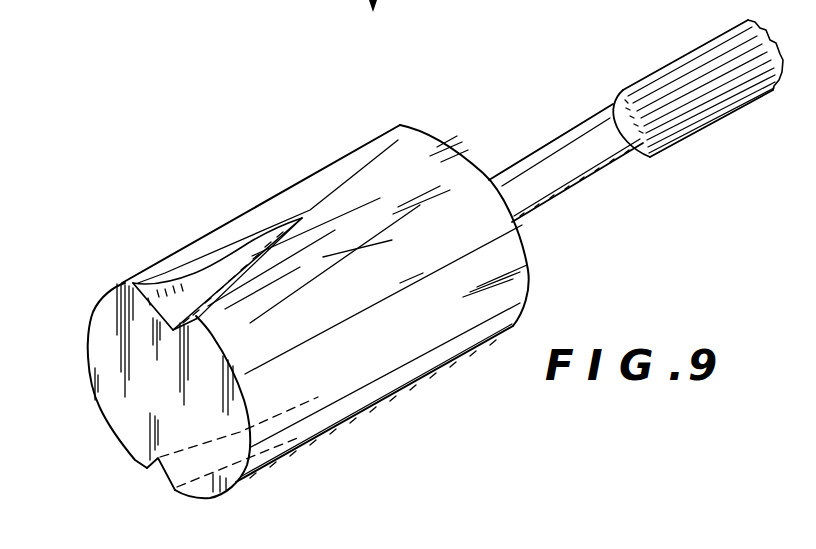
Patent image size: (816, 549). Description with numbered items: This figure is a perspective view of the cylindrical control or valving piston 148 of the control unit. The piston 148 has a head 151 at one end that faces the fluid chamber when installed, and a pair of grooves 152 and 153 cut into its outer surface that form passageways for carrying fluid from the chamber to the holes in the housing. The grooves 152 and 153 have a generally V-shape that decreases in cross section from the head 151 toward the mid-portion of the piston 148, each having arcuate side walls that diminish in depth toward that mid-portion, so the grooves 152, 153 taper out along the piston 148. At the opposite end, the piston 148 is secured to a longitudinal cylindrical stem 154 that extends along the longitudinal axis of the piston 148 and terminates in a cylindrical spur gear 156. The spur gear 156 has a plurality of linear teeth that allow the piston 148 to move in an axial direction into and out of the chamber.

The control piston 148 is at (314, 171).
The head 151 is at (107, 353).
The groove 152 is at (177, 292).
The groove 153 is at (163, 473).
The stem 154 is at (569, 133).
The spur gear 156 is at (688, 52).